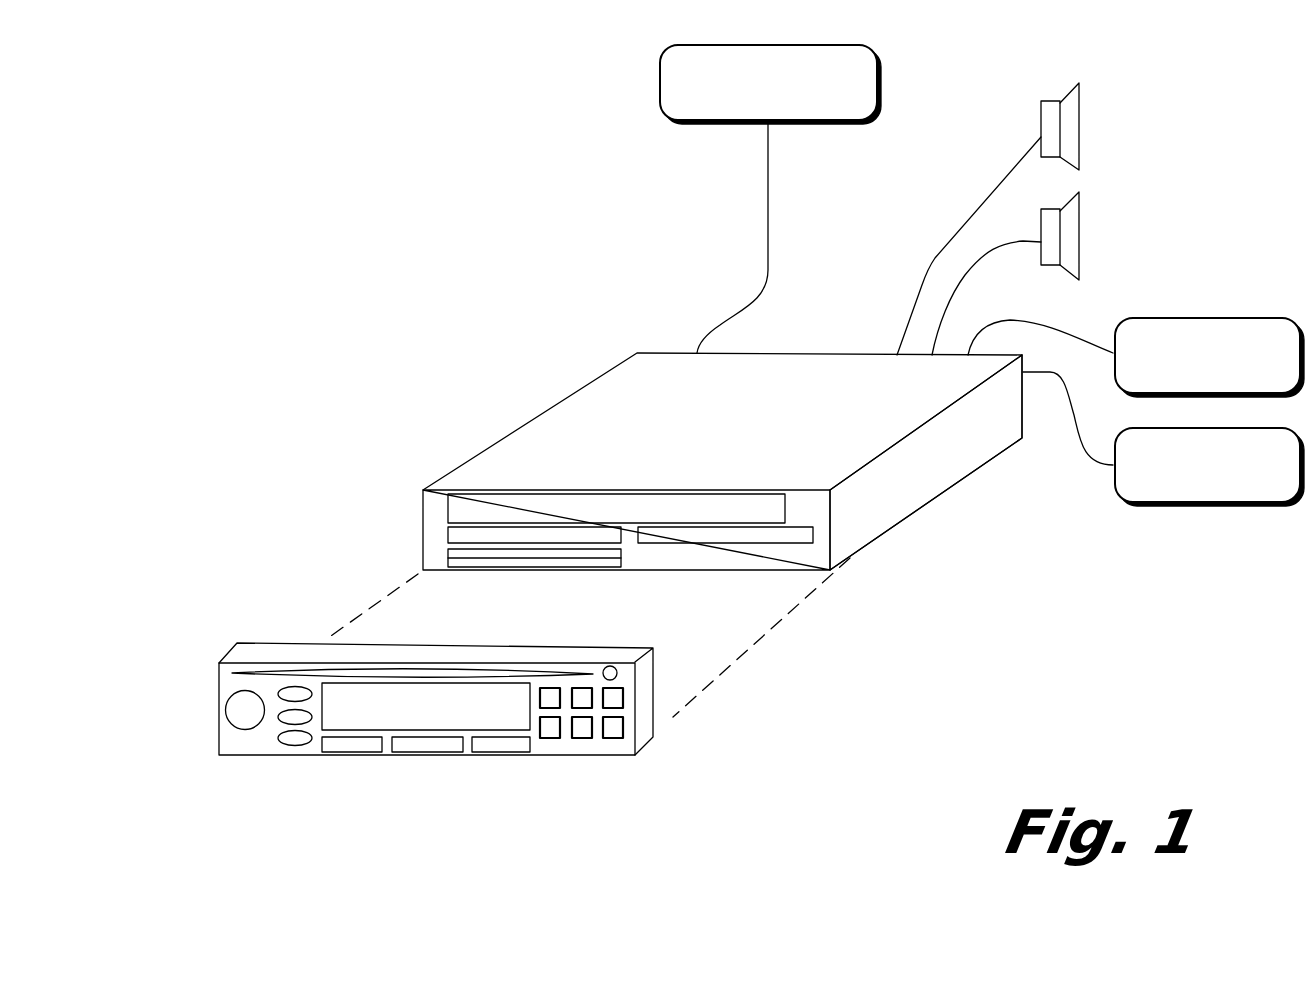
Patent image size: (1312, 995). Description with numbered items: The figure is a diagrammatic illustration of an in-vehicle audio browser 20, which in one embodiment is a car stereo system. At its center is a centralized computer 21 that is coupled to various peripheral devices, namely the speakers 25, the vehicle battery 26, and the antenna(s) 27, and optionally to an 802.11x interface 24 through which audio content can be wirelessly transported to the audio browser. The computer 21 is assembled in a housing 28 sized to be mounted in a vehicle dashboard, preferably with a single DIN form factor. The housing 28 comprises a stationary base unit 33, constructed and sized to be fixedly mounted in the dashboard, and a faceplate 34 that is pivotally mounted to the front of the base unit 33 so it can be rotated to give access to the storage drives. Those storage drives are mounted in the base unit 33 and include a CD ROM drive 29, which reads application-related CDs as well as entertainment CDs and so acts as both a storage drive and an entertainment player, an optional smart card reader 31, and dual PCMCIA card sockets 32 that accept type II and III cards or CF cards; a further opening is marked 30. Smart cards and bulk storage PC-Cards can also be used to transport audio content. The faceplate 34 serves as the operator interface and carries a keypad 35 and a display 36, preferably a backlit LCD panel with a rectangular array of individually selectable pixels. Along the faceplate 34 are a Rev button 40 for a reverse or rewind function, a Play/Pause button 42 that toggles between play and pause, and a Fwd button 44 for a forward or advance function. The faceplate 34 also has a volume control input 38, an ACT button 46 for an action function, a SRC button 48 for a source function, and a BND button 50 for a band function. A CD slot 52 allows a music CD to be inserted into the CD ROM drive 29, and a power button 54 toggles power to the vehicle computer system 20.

The in-vehicle audio browser 20 is at (233, 492).
The centralized computer 21 is at (877, 648).
The 802.11x interface 24 is at (683, 123).
The speakers 25 is at (1079, 138).
The vehicle battery 26 is at (1208, 318).
The antenna(s) 27 is at (1208, 502).
The housing 28 is at (858, 557).
The CD ROM drive 29 is at (565, 508).
The slot 30 is at (493, 535).
The smart card reader 31 is at (747, 537).
The dual PCMCIA card sockets 32 is at (540, 567).
The stationary base unit 33 is at (930, 482).
The faceplate 34 is at (657, 773).
The keypad 35 is at (567, 740).
The display 36 is at (482, 687).
The volume control input 38 is at (225, 718).
The Rev button 40 is at (352, 753).
The Play/Pause button 42 is at (427, 753).
The Fwd button 44 is at (502, 753).
The ACT button 46 is at (282, 690).
The SRC button 48 is at (277, 717).
The BND button 50 is at (300, 743).
The CD slot 52 is at (403, 670).
The power button 54 is at (615, 668).